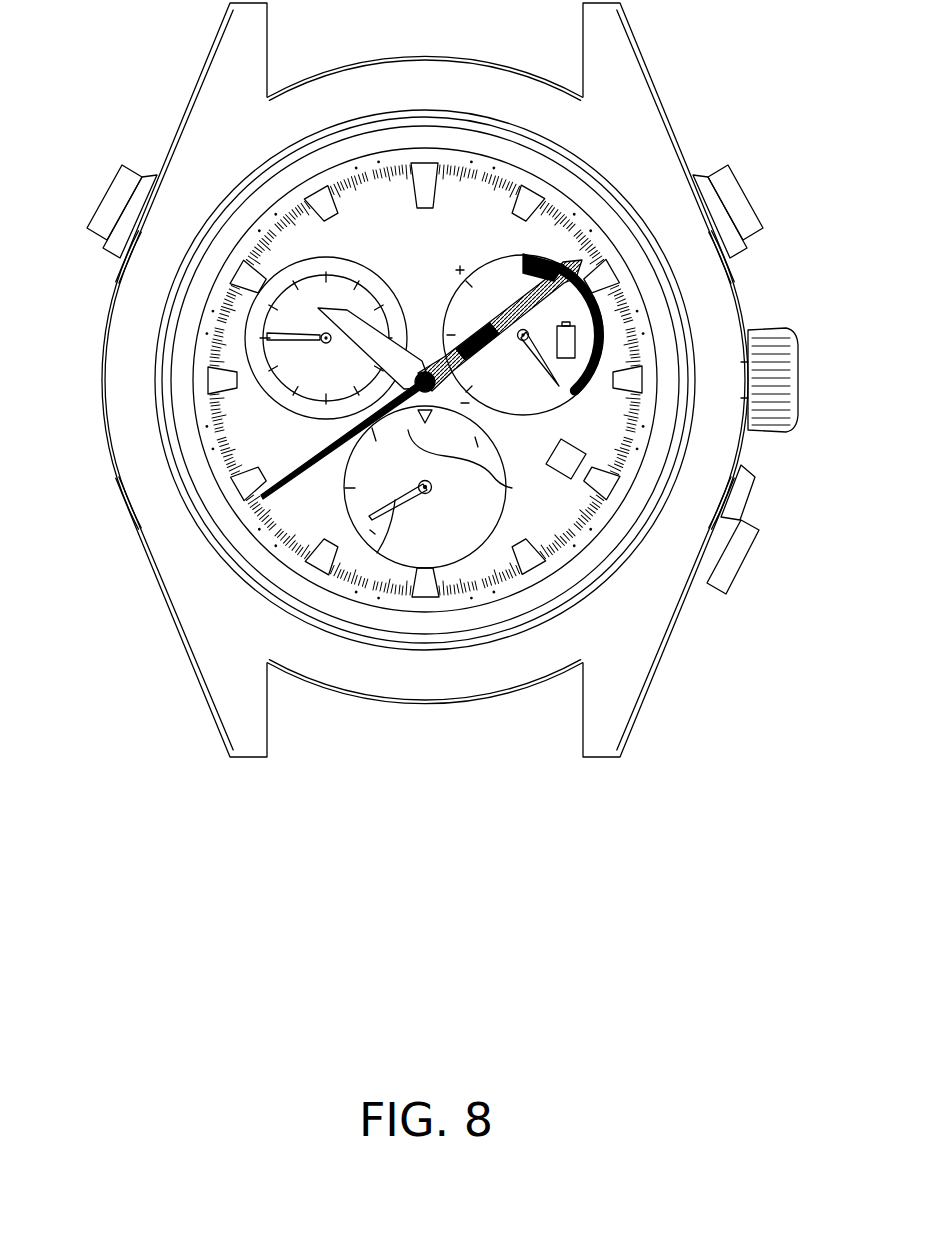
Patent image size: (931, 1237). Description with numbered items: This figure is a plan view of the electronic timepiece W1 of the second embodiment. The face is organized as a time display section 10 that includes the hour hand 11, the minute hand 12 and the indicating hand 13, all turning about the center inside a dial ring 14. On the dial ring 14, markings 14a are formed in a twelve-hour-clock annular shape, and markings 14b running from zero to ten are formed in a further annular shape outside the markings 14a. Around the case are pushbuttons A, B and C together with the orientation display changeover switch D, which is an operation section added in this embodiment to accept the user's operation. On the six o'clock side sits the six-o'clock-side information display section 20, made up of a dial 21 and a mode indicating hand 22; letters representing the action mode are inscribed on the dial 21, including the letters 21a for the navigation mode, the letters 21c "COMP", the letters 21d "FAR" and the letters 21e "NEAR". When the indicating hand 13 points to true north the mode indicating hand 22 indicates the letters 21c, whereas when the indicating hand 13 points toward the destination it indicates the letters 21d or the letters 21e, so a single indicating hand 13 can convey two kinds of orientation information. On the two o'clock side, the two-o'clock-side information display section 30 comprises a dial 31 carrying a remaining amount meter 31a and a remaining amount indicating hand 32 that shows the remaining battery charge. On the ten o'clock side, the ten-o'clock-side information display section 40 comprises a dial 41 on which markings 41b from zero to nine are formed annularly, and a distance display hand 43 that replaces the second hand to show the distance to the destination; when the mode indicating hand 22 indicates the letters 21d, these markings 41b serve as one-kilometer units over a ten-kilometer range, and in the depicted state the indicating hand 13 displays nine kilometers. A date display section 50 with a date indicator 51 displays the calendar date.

The electronic timepiece W1 is at (708, 82).
The button A is at (107, 184).
The button B is at (745, 200).
The crown C is at (798, 410).
The orientation display changeover switch D is at (752, 550).
The time display section 10 is at (470, 215).
The hour hand 11 is at (372, 338).
The minute hand 12 is at (537, 252).
The indicating hand 13 is at (318, 458).
The dial ring 14 is at (238, 542).
The markings 14a is at (247, 487).
The markings 14b is at (213, 507).
The 6-o'clock-side information display section 20 is at (404, 567).
The dial 21 is at (478, 533).
The letters 21a is at (477, 441).
The letters 21c is at (506, 487).
The letters 21d is at (370, 531).
The letters 21e is at (350, 457).
The mode indicating hand 22 is at (379, 542).
The 2-o'clock-side information display section 30 is at (603, 340).
The dial 31 is at (741, 465).
The remaining amount meter 31a is at (600, 308).
The remaining amount indicating hand 32 is at (560, 384).
The 10-o'clock-side information display section 40 is at (243, 370).
The dial 41 is at (252, 362).
The markings 41b is at (265, 262).
The distance display hand 43 is at (270, 372).
The date display section 50 is at (580, 444).
The date indicator 51 is at (572, 482).